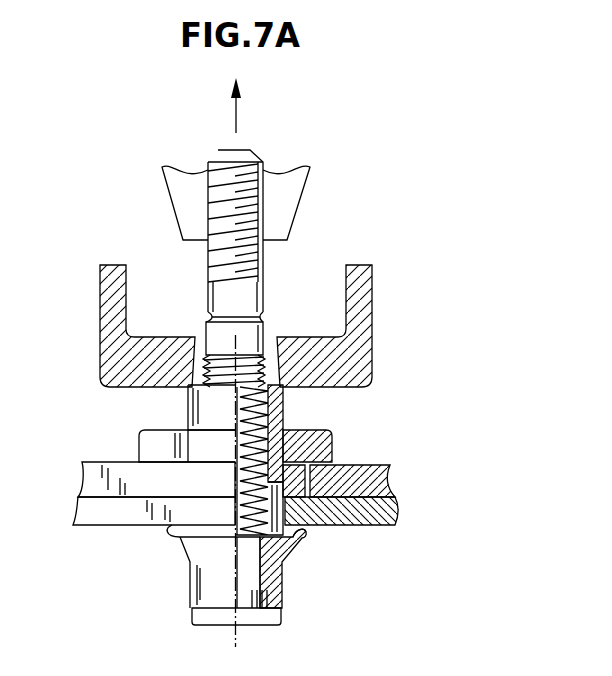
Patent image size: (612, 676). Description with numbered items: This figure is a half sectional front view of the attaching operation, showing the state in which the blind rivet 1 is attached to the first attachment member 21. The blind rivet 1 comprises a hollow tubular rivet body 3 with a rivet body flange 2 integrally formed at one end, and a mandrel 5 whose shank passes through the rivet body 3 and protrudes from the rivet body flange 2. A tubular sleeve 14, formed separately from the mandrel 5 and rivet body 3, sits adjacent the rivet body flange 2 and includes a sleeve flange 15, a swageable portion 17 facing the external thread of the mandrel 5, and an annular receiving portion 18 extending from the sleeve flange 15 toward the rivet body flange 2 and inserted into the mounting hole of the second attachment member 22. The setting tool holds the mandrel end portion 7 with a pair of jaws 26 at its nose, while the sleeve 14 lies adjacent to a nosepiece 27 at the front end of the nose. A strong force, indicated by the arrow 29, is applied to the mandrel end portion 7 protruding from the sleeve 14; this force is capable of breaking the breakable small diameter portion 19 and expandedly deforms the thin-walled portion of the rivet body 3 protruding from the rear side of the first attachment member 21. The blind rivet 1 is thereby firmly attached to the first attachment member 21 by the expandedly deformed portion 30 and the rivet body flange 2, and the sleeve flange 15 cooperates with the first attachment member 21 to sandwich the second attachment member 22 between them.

The blind rivet 1 is at (144, 247).
The arrow 29 is at (232, 101).
The mandrel end portion 7 is at (263, 165).
The jaws 26 is at (178, 190).
The nosepiece 27 is at (103, 305).
The breakable small diameter portion 19 is at (260, 318).
The mandrel 5 is at (198, 325).
The sleeve 14 is at (134, 444).
The swageable portion 17 is at (283, 412).
The sleeve flange 15 is at (334, 436).
The receiving portion 18 is at (325, 468).
The second attachment member 22 is at (386, 487).
The first attachment member 21 is at (389, 508).
The rivet body flange 2 is at (306, 531).
The expandedly deformed portion 30 is at (168, 531).
The rivet body 3 is at (183, 593).